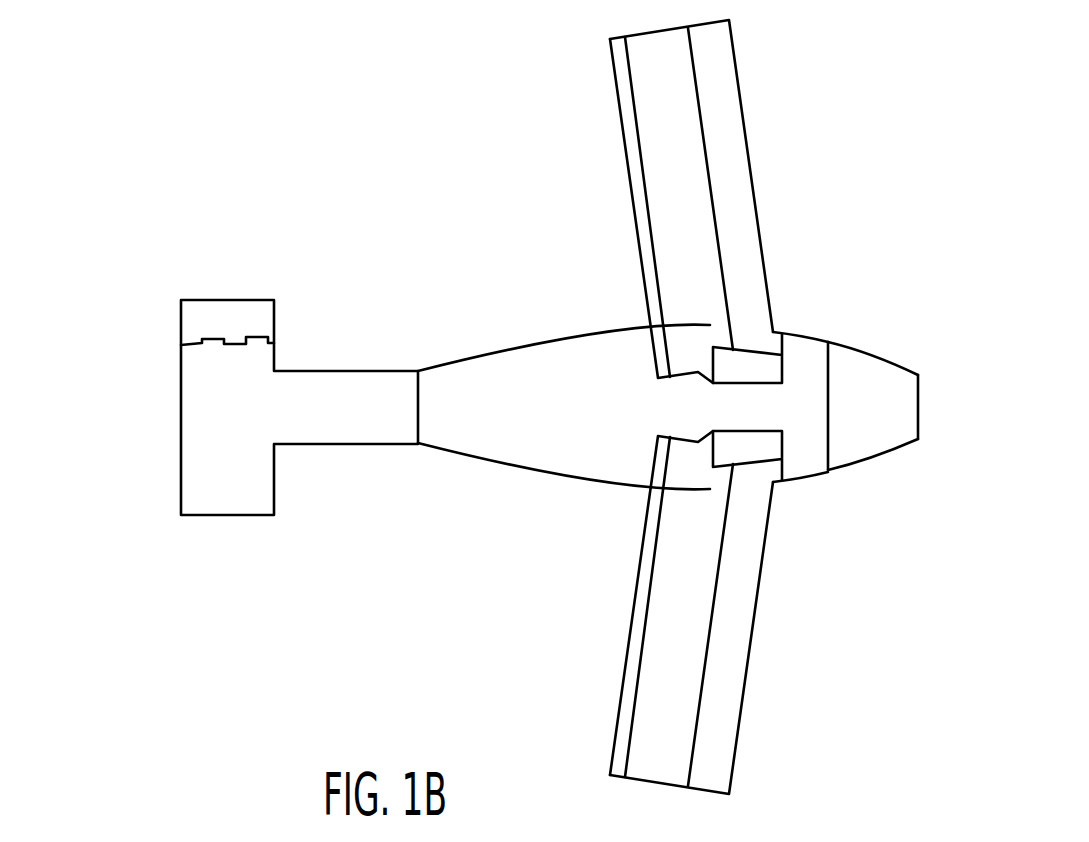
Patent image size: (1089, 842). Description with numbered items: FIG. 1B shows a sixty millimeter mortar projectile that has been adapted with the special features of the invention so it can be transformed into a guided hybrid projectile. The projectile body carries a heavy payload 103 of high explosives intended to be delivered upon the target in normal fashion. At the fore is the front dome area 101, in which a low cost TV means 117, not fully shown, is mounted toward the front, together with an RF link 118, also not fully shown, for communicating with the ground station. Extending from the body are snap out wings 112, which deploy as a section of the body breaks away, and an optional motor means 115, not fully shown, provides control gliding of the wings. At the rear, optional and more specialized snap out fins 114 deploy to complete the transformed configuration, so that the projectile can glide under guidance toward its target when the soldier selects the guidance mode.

The front dome area 101 is at (832, 337).
The heavy payload 103 is at (567, 478).
The snap out wings 112 is at (743, 120).
The snap out fins 114 is at (250, 300).
The motor means 115 is at (773, 332).
The TV means 117 is at (918, 422).
The RF link 118 is at (895, 382).